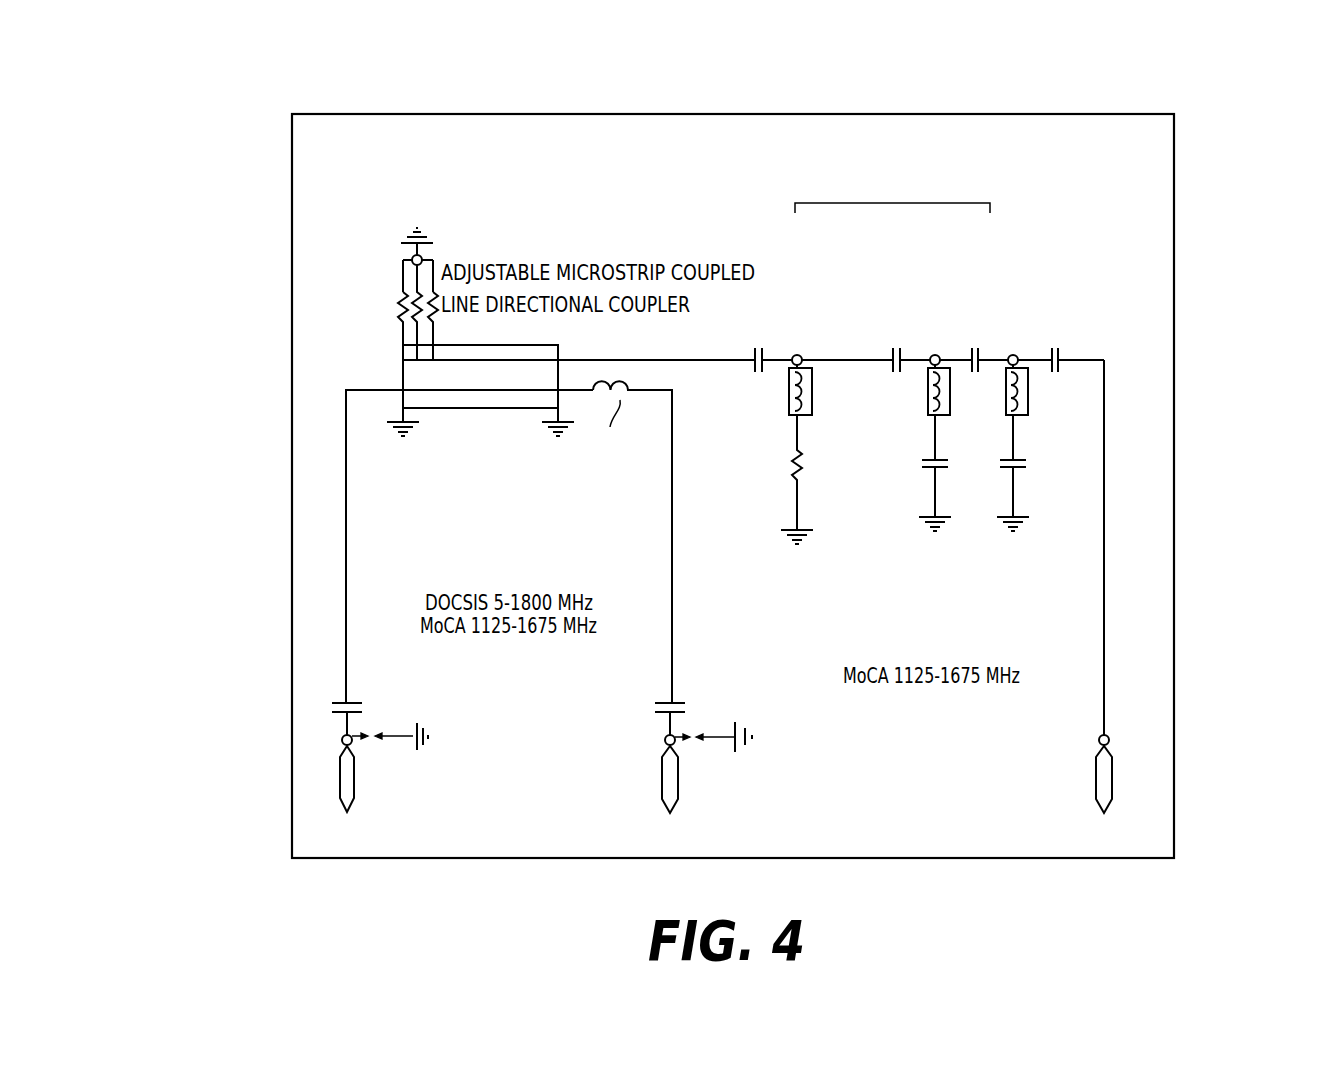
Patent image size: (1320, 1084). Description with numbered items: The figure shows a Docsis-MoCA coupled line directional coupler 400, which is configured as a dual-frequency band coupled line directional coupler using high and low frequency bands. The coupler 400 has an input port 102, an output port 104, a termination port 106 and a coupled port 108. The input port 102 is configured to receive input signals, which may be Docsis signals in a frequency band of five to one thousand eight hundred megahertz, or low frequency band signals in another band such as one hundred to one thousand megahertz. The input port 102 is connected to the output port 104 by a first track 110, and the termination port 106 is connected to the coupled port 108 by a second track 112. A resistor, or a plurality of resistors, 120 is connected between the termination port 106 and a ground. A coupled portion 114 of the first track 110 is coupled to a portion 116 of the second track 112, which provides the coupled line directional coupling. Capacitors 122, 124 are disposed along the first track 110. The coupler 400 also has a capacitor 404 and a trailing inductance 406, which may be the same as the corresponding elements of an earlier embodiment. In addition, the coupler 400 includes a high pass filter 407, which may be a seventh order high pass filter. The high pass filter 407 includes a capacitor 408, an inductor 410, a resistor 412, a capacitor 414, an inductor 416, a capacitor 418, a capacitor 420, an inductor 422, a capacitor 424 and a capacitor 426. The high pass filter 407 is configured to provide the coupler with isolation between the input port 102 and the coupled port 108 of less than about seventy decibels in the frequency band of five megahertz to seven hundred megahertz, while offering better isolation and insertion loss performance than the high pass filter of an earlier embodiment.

The Docsis-MoCA coupled line directional coupler 400 is at (165, 137).
The termination port 106 is at (410, 257).
The resistor 120 is at (366, 302).
The coupled portion of the first track 114 is at (430, 390).
The portion of the second track 116 is at (500, 359).
The capacitor 404 is at (447, 410).
The trailing inductance 406 is at (615, 375).
The first track 110 is at (347, 590).
The capacitor 122 is at (334, 708).
The input port 102 is at (340, 805).
The capacitor 124 is at (658, 700).
The output port 104 is at (681, 790).
The second track 112 is at (1104, 507).
The coupled port 108 is at (1113, 788).
The high pass filter 407 is at (936, 170).
The capacitor 408 is at (750, 372).
The inductor 410 is at (793, 376).
The resistor 412 is at (803, 473).
The capacitor 414 is at (893, 372).
The inductor 416 is at (946, 375).
The capacitor 418 is at (938, 470).
The inductor 422 is at (981, 352).
The capacitor 420 is at (1018, 352).
The capacitor 424 is at (1063, 350).
The capacitor 426 is at (1017, 468).